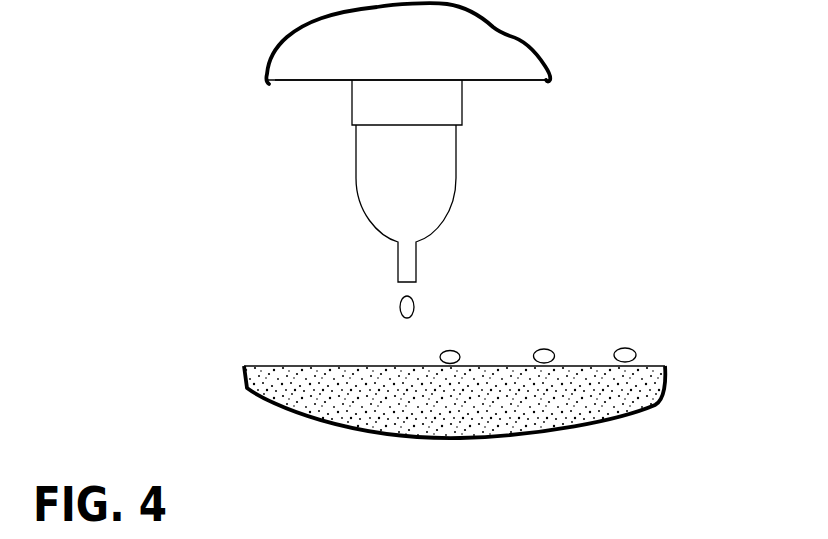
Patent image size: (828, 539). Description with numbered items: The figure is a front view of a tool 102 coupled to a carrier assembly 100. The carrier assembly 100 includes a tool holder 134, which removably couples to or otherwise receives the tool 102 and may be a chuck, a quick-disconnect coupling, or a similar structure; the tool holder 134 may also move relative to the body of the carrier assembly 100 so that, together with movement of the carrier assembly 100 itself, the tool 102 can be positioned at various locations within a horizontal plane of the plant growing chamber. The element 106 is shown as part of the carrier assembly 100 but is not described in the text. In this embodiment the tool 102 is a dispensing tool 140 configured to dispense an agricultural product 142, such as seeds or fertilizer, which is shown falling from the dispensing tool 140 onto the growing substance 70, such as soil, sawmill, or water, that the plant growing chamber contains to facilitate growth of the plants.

The carrier assembly 100 is at (552, 50).
The tool 102 is at (185, 110).
The base plate 106 is at (517, 80).
The tool holder 134 is at (352, 97).
The dispensing tool 140 is at (456, 187).
The agricultural product 142 is at (415, 307).
The growing substance 70 is at (293, 366).